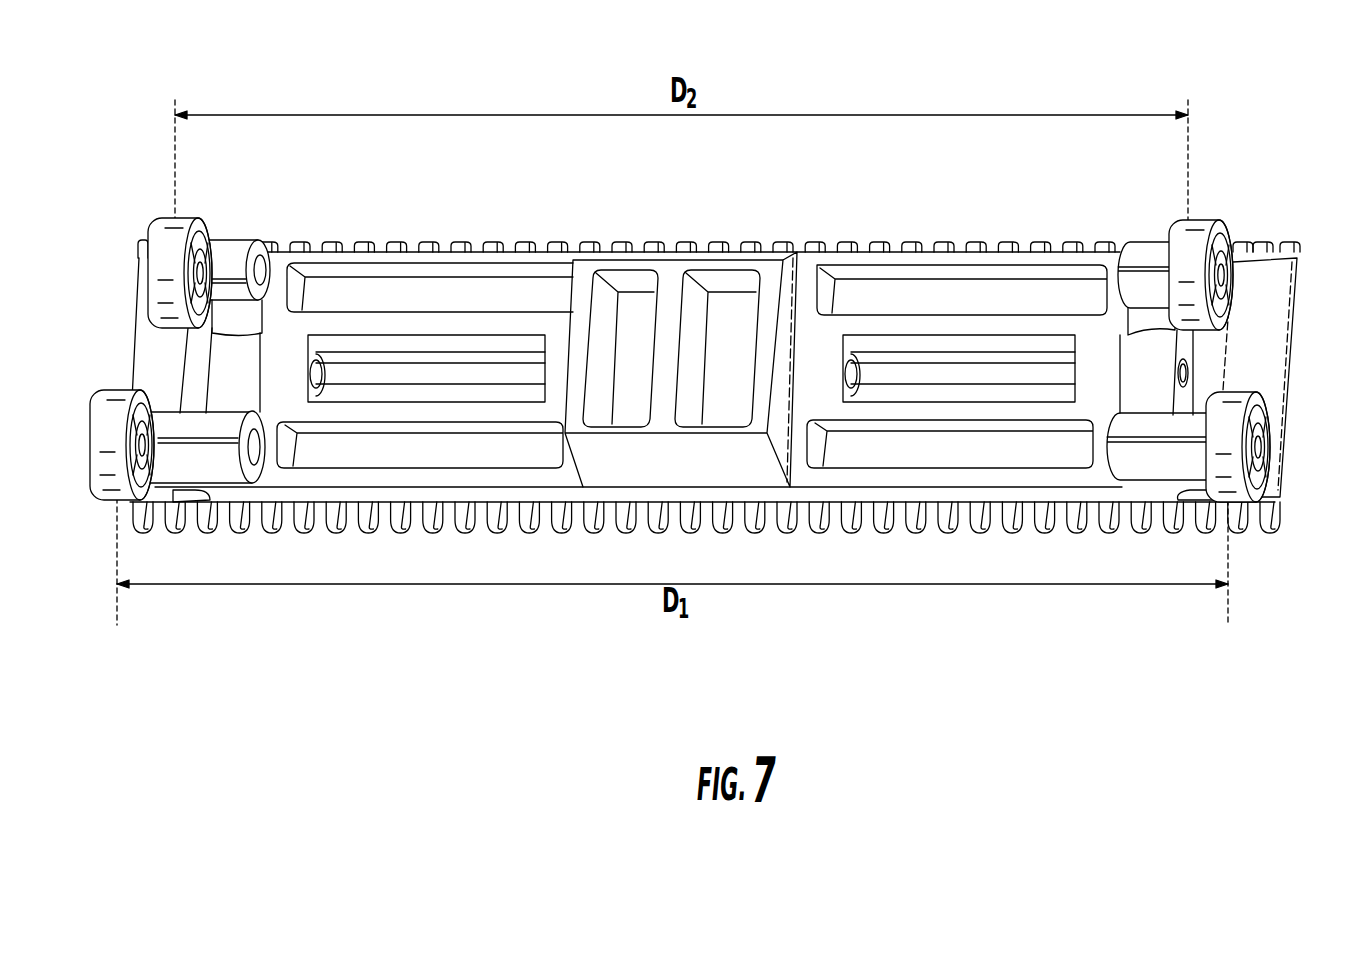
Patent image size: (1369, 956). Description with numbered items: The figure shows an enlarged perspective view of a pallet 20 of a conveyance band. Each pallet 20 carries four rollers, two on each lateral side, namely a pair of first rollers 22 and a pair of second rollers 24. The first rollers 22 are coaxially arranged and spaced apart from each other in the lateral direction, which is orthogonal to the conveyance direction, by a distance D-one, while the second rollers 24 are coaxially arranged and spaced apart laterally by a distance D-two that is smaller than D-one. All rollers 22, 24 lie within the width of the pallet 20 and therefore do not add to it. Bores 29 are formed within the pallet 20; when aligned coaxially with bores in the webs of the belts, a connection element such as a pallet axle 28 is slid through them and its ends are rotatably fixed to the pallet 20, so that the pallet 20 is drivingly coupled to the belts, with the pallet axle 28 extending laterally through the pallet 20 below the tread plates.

The pallet 20 is at (1337, 142).
The first rollers 22 is at (103, 432).
The second rollers 24 is at (167, 272).
The pallet axle 28 is at (1010, 368).
The bores 29 is at (319, 354).